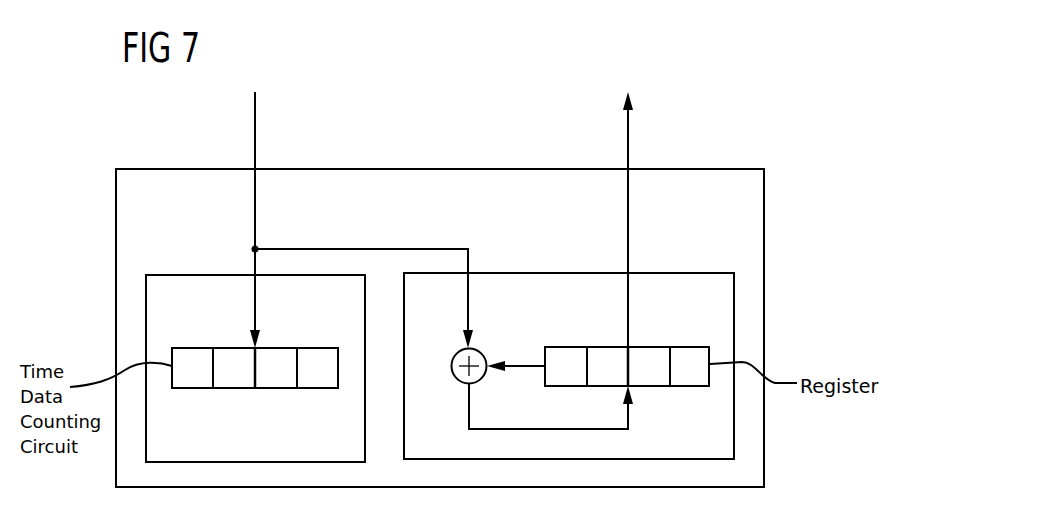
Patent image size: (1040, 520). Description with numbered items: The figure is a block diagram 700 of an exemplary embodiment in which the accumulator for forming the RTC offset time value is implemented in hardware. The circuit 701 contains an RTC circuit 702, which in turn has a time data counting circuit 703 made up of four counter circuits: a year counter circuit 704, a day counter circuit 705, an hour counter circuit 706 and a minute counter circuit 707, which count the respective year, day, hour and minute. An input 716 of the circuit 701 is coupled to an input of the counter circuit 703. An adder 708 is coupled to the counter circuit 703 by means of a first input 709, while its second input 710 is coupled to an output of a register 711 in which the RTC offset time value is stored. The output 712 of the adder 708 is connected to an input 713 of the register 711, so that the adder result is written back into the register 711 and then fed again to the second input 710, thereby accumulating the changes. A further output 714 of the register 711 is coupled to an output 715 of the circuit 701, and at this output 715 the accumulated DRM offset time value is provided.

The block diagram 700 is at (690, 107).
The circuit 701 is at (443, 168).
The RTC circuit 702 is at (198, 274).
The time data counting circuit 703 is at (193, 389).
The year counter circuit 704 is at (192, 357).
The day counter circuit 705 is at (233, 389).
The hour counter circuit 706 is at (276, 357).
The minute counter circuit 707 is at (317, 389).
The adder 708 is at (482, 352).
The first input 709 is at (462, 348).
The second input 710 is at (490, 376).
The register 711 is at (658, 347).
The output 712 is at (464, 385).
The input 713 is at (633, 392).
The further output 714 is at (626, 345).
The output 715 is at (628, 167).
The input 716 is at (255, 167).